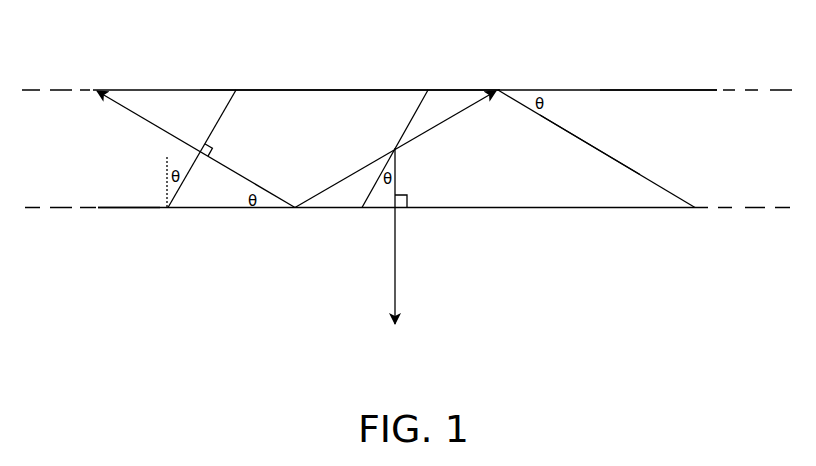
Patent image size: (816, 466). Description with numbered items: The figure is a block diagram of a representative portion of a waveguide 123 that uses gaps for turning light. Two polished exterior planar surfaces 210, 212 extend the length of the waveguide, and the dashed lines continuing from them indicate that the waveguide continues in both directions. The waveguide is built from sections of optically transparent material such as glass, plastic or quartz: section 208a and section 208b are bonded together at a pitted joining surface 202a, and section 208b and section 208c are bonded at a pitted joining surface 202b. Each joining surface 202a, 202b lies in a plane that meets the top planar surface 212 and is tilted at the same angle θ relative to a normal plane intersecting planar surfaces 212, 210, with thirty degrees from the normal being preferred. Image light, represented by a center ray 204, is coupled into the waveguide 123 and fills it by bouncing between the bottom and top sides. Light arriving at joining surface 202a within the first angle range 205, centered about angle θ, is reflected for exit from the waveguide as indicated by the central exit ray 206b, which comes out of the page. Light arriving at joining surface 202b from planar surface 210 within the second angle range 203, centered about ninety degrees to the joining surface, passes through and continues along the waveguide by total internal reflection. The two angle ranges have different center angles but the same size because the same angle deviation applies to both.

The waveguide 123 is at (676, 89).
The planar surface 212 is at (615, 90).
The optically transparent material section 208a is at (497, 195).
The optically transparent material section 208b is at (284, 108).
The optically transparent material section 208c is at (131, 180).
The pitted joining surface 202a is at (412, 112).
The pitted joining surface 202b is at (224, 107).
The second angle range 203 is at (247, 155).
The representative center ray 204 is at (647, 173).
The first angle range 205 is at (607, 130).
The planar surface 210 is at (663, 208).
The central exit ray 206b is at (396, 288).